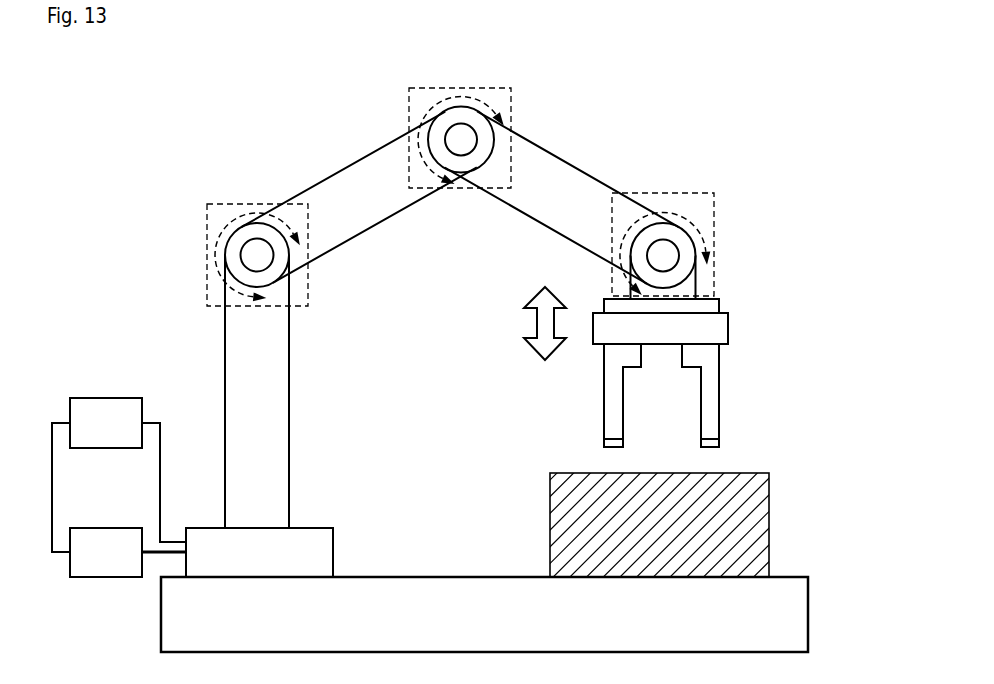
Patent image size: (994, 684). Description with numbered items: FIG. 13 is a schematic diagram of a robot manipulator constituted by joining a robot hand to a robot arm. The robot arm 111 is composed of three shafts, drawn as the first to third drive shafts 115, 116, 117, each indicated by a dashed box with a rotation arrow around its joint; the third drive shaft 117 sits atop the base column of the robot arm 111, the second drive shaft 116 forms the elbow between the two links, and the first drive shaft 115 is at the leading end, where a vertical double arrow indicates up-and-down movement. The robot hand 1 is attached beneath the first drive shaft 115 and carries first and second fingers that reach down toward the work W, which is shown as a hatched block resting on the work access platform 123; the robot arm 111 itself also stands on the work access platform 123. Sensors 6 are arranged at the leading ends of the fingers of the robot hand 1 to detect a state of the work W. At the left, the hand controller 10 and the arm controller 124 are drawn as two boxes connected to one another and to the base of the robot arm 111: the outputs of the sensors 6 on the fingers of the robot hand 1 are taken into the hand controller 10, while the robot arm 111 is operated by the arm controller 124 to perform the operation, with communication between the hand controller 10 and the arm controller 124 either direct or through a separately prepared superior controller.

The robot arm 111 is at (467, 313).
The first drive shaft 115 is at (714, 205).
The second drive shaft 116 is at (512, 100).
The third drive shaft 117 is at (207, 222).
The robot hand 1 is at (690, 378).
The sensor 6 is at (700, 443).
The hand controller 10 is at (103, 398).
The arm controller 124 is at (104, 528).
The work access platform 123 is at (421, 577).
The work W is at (769, 489).